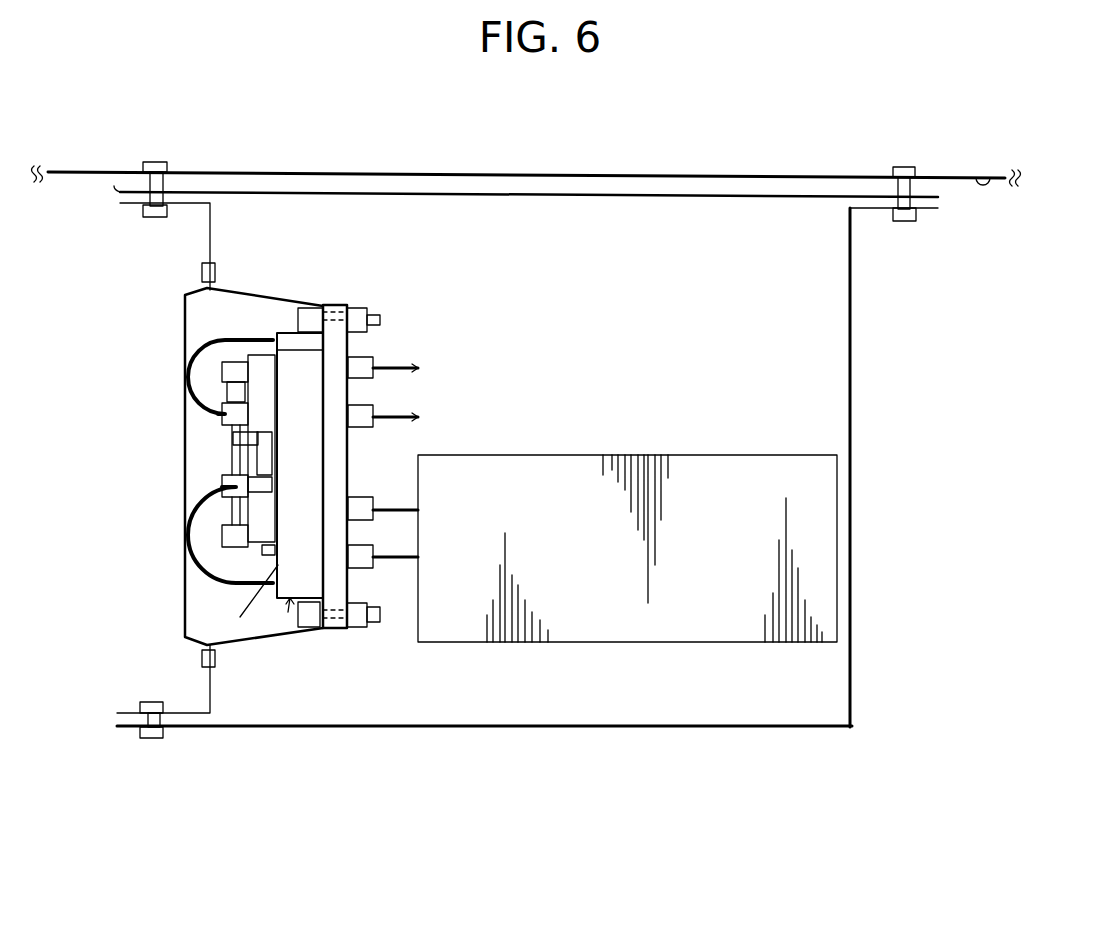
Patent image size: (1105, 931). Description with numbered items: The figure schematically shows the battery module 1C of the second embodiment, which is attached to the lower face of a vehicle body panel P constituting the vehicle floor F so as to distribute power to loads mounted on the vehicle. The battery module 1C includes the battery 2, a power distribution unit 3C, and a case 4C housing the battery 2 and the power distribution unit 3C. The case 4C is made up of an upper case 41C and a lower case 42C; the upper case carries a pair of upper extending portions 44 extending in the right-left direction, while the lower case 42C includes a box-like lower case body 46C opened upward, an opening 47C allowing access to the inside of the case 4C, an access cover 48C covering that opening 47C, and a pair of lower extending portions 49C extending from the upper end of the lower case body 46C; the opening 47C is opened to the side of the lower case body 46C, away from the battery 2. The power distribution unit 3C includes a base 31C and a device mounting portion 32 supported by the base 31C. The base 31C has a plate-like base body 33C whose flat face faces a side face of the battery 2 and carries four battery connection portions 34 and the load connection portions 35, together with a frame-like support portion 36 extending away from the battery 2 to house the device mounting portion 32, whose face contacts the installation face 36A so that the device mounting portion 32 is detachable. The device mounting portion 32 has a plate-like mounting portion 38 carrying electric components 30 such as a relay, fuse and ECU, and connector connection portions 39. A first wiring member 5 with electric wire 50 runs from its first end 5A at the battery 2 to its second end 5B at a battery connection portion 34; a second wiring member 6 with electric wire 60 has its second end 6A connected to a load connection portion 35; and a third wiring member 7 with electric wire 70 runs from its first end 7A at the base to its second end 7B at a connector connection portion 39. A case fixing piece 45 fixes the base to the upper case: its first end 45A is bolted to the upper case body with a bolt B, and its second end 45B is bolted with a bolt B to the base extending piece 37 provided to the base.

The battery module 1C is at (1070, 70).
The vehicle floor F is at (910, 110).
The vehicle body panel P is at (983, 175).
The bolt B is at (158, 162).
The battery 2 is at (730, 561).
The power distribution unit 3C is at (58, 818).
The case 4C is at (1053, 203).
The first wiring member 5 is at (415, 506).
The first end 5A is at (405, 512).
The second end 5B is at (380, 508).
The second wiring member 6 is at (388, 365).
The second end 6A is at (378, 366).
The third wiring member 7 is at (185, 409).
The first end 7A is at (272, 339).
The second end 7B is at (222, 371).
The electric components 30 is at (270, 405).
The base 31C is at (250, 726).
The device mounting portion 32 is at (183, 625).
The base body 33C is at (355, 628).
The battery connection portions 34 is at (360, 497).
The load connection portions 35 is at (380, 320).
The support portion 36 is at (288, 612).
The installation face 36A is at (315, 628).
The base extending piece 37 is at (335, 305).
The mounting portion 38 is at (262, 551).
The connector connection portions 39 is at (240, 403).
The upper case 41C is at (915, 186).
The lower case 42C is at (925, 215).
The upper extending portions 44 is at (120, 193).
The case fixing piece 45 is at (253, 292).
The first end 45A is at (212, 287).
The second end 45B is at (305, 308).
The lower case body 46C is at (852, 312).
The opening 47C is at (205, 656).
The access cover 48C is at (185, 590).
The lower extending portions 49C is at (122, 204).
The electric wire 50 is at (395, 560).
The electric wire 60 is at (385, 415).
The electric wire 70 is at (190, 369).